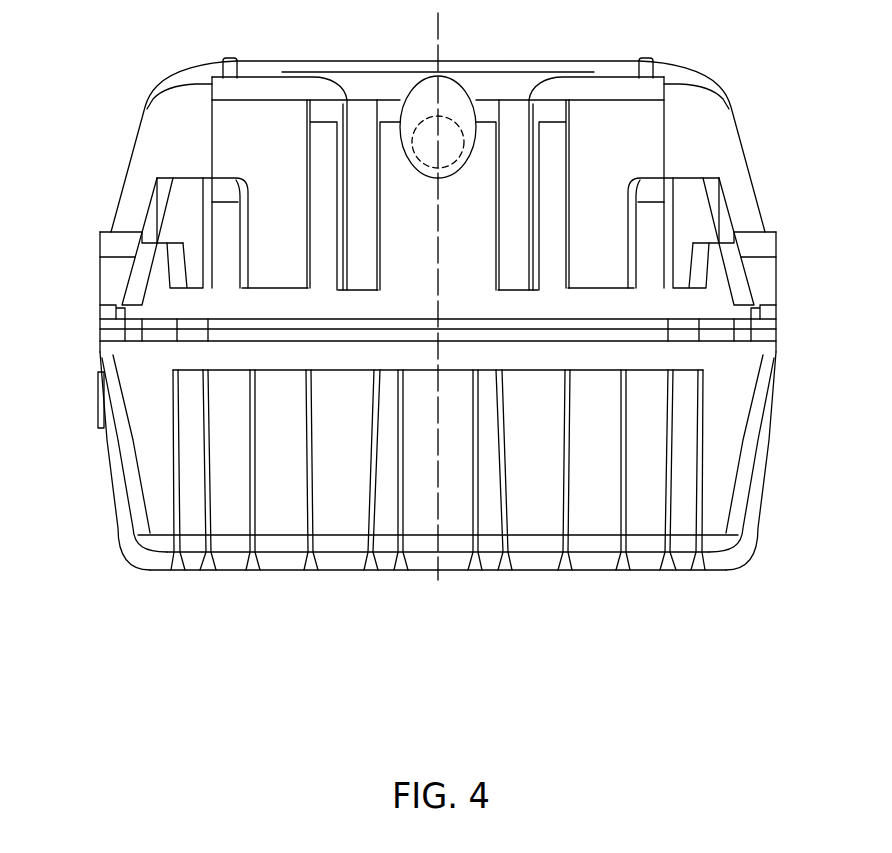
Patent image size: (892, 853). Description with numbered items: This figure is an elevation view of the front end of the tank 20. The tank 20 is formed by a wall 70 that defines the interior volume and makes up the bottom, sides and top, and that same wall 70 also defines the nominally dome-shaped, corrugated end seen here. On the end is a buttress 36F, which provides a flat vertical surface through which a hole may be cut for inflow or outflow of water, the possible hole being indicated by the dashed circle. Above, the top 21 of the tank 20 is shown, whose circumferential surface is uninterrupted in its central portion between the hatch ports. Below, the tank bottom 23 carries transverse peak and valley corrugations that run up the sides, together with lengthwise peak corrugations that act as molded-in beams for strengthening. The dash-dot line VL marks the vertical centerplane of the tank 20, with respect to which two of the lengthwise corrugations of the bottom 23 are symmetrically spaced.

The tank 20 is at (125, 66).
The top 21 is at (571, 58).
The tank bottom 23 is at (462, 582).
The buttress 36F is at (452, 92).
The wall 70 is at (96, 391).
The vertical centerplane line VL is at (436, 21).